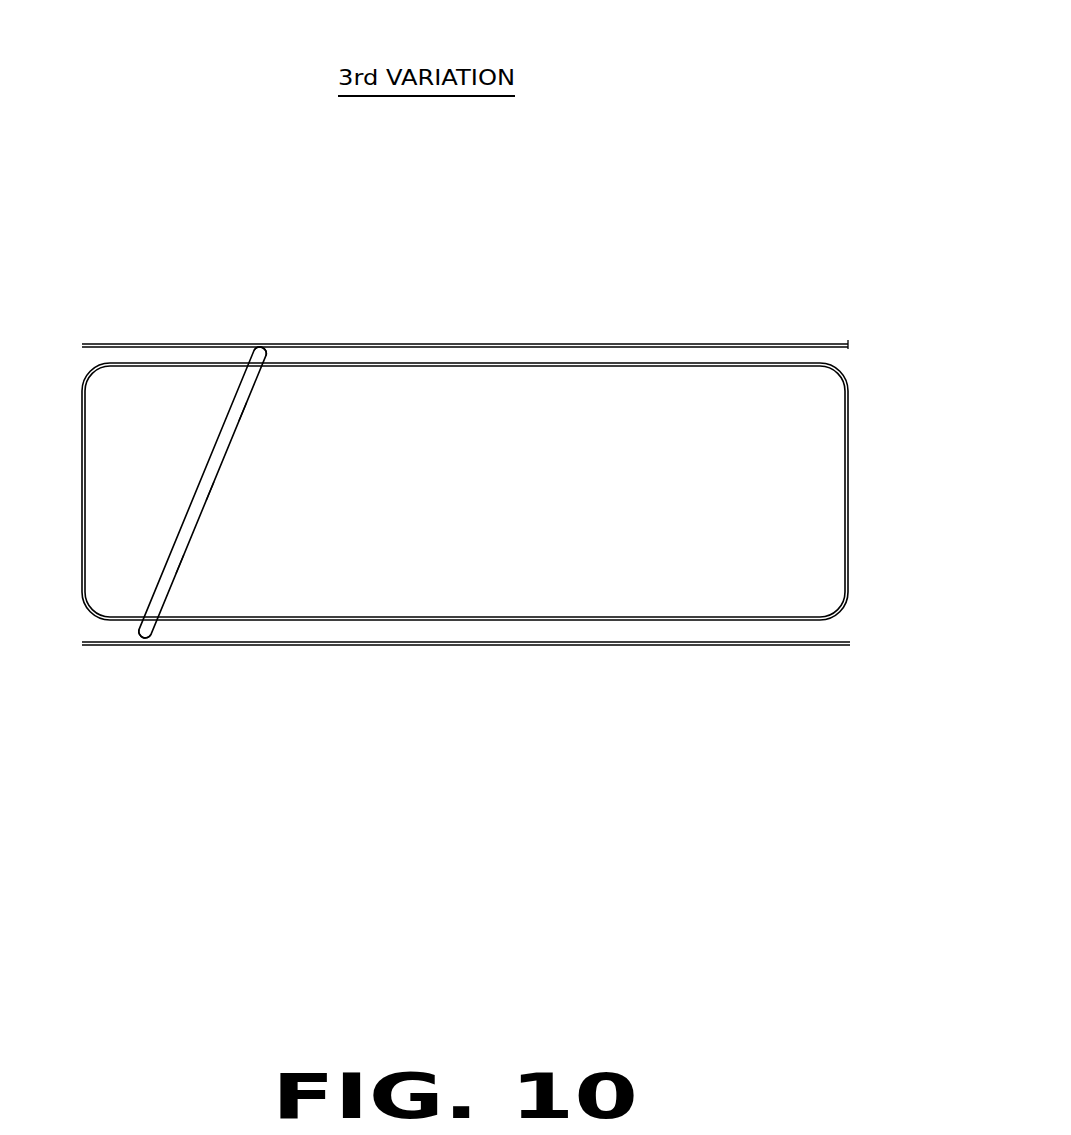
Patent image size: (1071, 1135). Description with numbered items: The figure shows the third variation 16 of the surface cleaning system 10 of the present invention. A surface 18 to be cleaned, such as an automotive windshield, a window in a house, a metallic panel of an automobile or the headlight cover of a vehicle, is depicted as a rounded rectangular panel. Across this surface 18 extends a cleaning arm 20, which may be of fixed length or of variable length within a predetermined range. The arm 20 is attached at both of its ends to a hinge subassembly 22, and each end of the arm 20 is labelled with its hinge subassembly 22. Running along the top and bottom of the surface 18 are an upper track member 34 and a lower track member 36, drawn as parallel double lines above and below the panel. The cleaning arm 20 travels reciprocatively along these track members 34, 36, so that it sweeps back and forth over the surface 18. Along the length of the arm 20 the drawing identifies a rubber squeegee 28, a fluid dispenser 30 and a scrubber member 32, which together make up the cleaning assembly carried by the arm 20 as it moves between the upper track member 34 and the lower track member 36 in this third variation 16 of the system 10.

The surface cleaning system 10 is at (670, 118).
The third variation 16 is at (757, 288).
The surface 18 is at (465, 543).
The cleaning arm 20 is at (228, 480).
The hinge subassembly 22 is at (257, 350).
The rubber squeegee 28 is at (245, 410).
The fluid dispenser 30 is at (212, 490).
The scrubber member 32 is at (177, 563).
The upper track 34 is at (465, 296).
The lower track 36 is at (466, 686).